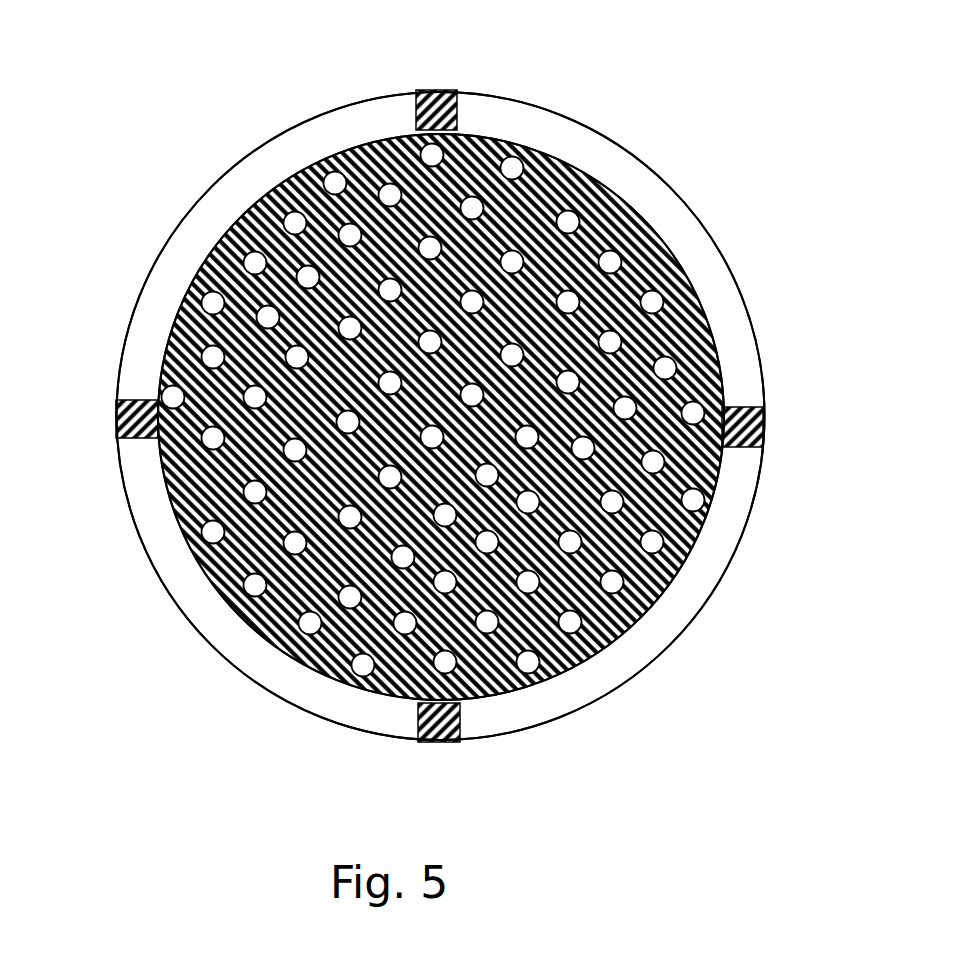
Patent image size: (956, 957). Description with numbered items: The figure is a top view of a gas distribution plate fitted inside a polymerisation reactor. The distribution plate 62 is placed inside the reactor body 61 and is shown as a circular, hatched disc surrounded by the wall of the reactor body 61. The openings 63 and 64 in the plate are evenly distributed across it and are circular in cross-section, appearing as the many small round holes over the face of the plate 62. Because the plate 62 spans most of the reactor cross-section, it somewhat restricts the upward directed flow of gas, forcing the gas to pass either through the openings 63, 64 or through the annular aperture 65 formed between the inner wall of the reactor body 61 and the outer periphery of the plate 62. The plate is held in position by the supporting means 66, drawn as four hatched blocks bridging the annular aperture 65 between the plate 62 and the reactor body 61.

The reactor body 61 is at (730, 268).
The distribution plate 62 is at (572, 178).
The opening 63 is at (645, 250).
The opening 64 is at (512, 163).
The annular aperture 65 is at (746, 372).
The supporting means 66 is at (423, 90).